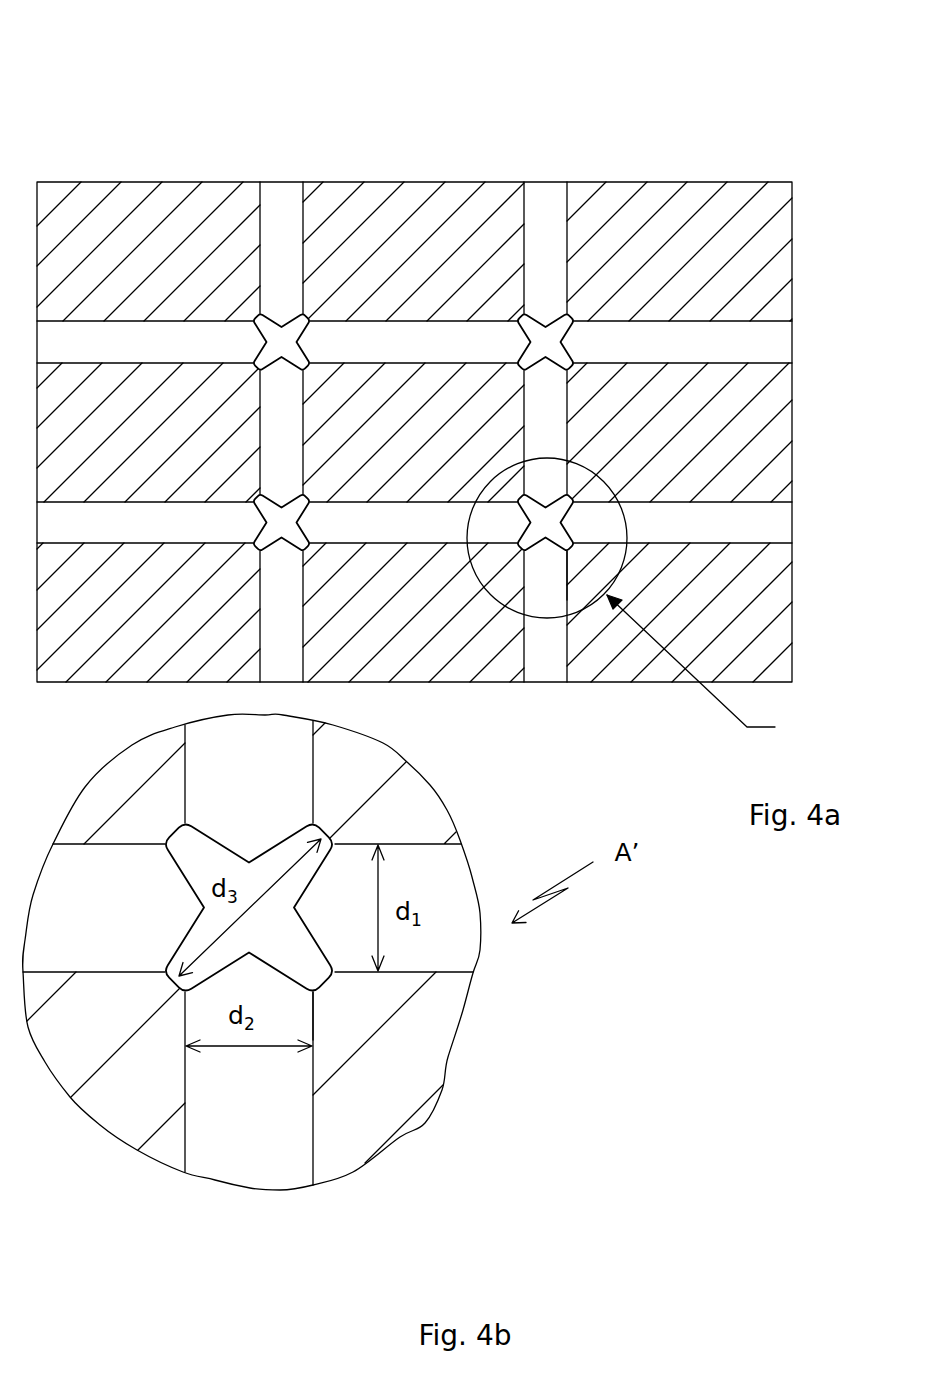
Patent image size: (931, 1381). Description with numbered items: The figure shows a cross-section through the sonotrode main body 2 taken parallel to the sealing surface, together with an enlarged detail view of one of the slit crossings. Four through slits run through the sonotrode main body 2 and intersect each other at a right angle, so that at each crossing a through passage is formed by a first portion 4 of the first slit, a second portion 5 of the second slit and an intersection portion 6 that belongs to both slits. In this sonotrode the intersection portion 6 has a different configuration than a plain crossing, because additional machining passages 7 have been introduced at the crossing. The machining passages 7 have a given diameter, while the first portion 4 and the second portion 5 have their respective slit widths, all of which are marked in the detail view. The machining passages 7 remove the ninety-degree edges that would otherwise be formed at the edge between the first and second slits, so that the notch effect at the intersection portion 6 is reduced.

In FIG. 4A, the sonotrode main body 2 is at (465, 412).
In FIG. 4A, the first portion of the first slit 4 is at (766, 524).
In FIG. 4B, the first portion of the first slit 4 is at (437, 950).
In FIG. 4A, the second portion of the second slit 5 is at (552, 658).
In FIG. 4B, the second portion of the second slit 5 is at (223, 1145).
In FIG. 4A, the intersection portion 6 is at (513, 528).
In FIG. 4B, the intersection portion 6 is at (310, 897).
In FIG. 4A, the machining passages 7 is at (565, 555).
In FIG. 4B, the machining passages 7 is at (287, 952).